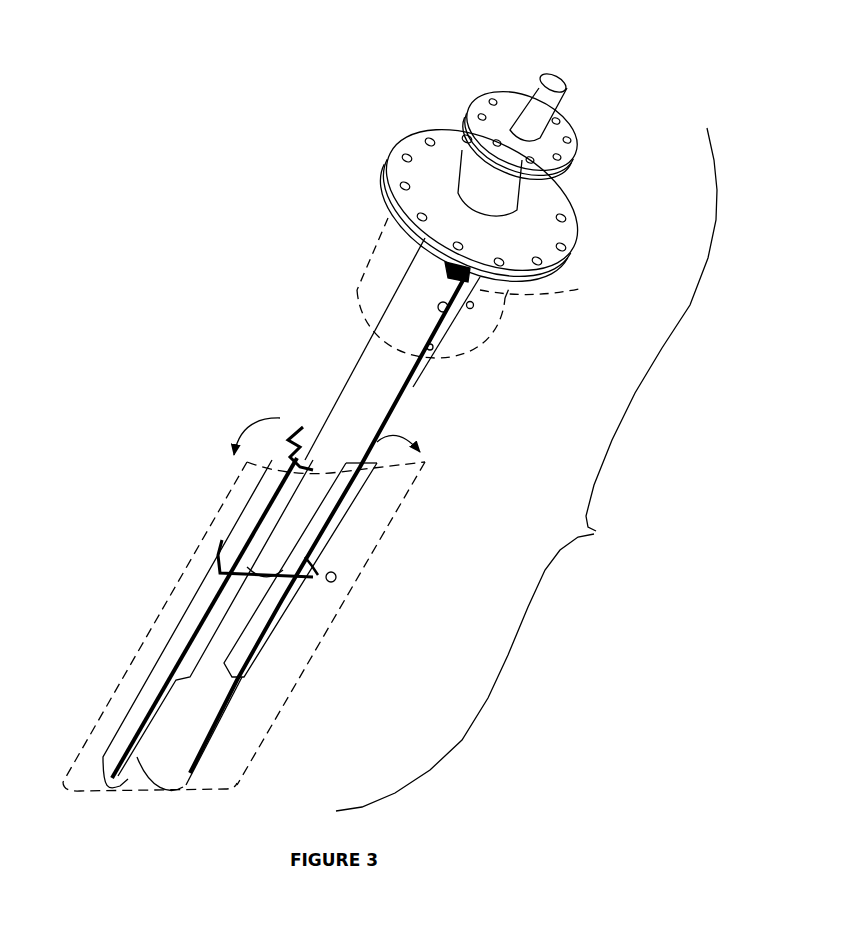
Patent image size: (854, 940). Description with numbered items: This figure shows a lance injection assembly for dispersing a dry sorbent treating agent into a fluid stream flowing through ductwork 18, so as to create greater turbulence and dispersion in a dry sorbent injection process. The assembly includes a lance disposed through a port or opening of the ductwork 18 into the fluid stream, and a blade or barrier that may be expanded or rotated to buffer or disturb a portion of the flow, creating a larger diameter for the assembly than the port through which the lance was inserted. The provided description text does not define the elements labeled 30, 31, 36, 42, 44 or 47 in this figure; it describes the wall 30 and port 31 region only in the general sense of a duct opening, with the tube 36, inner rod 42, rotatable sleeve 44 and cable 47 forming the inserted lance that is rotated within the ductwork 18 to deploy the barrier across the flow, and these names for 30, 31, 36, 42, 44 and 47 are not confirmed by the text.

The ductwork 18 is at (370, 262).
The vessel wall 30 is at (526, 469).
The port 31 is at (533, 85).
The probe tube 36 is at (325, 413).
The rod 42 is at (122, 724).
The sleeve 44 is at (290, 688).
The cable 47 is at (390, 387).